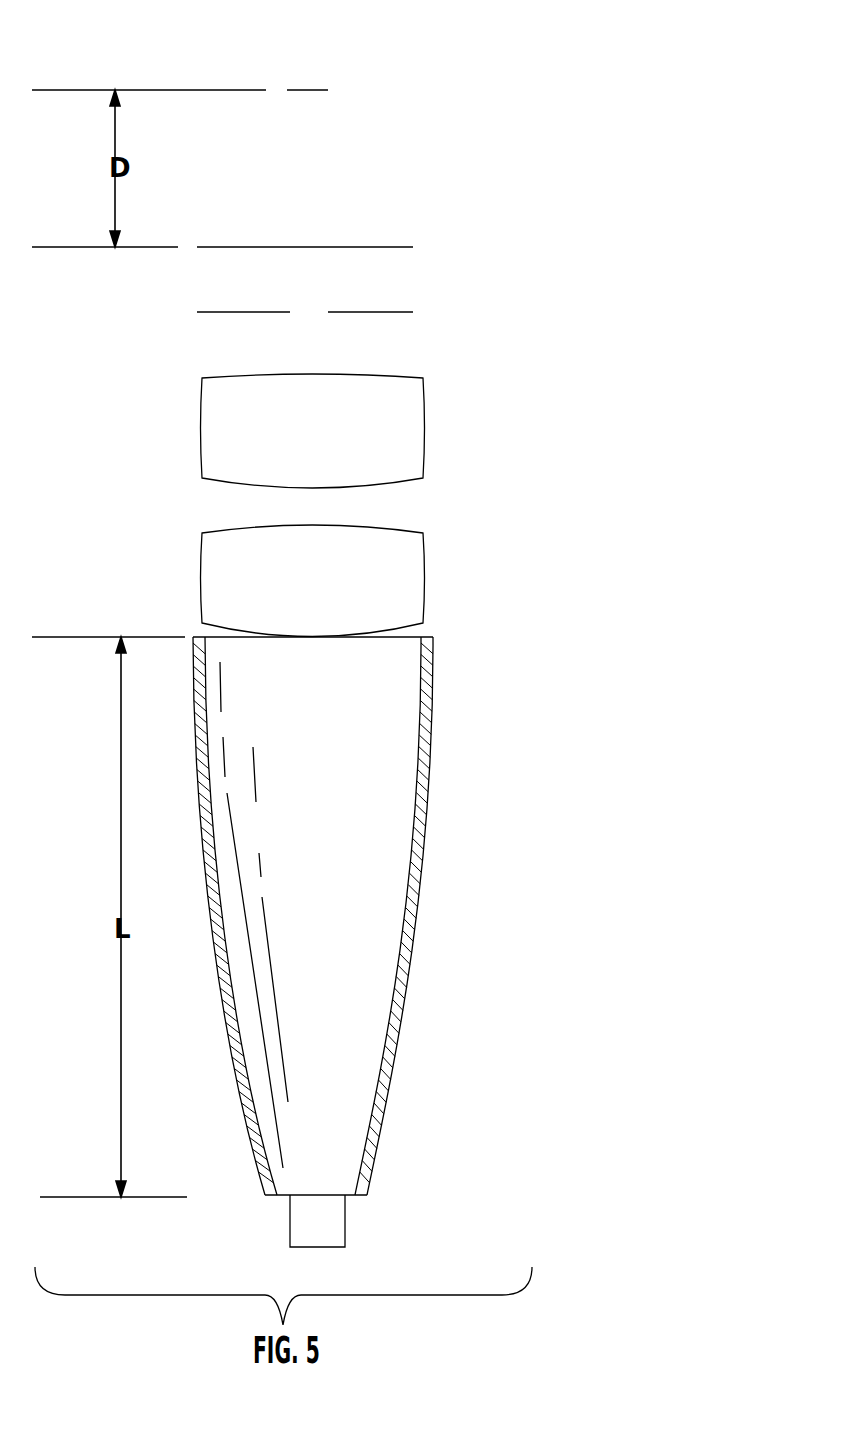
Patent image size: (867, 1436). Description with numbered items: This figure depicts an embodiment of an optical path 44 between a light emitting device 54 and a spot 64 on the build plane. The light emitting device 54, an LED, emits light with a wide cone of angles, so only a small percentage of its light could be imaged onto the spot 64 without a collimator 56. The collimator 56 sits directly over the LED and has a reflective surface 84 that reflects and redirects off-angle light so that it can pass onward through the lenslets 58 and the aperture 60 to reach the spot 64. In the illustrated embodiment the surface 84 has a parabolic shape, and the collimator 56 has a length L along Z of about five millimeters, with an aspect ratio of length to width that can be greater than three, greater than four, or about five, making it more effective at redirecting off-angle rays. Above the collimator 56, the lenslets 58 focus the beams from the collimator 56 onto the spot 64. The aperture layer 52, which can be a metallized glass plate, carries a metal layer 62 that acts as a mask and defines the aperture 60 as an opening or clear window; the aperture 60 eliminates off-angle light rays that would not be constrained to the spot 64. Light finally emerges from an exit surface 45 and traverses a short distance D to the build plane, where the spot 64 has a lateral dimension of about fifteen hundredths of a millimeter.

The optical path 44 is at (378, 108).
The exit surface 45 is at (388, 247).
The aperture layer 52 is at (397, 278).
The light emitting device 54 is at (330, 1223).
The collimator 56 is at (413, 935).
The lenslets 58 is at (403, 443).
The aperture 60 is at (310, 310).
The metal layer 62 is at (205, 312).
The spot 64 is at (307, 90).
The reflective surface 84 is at (385, 832).